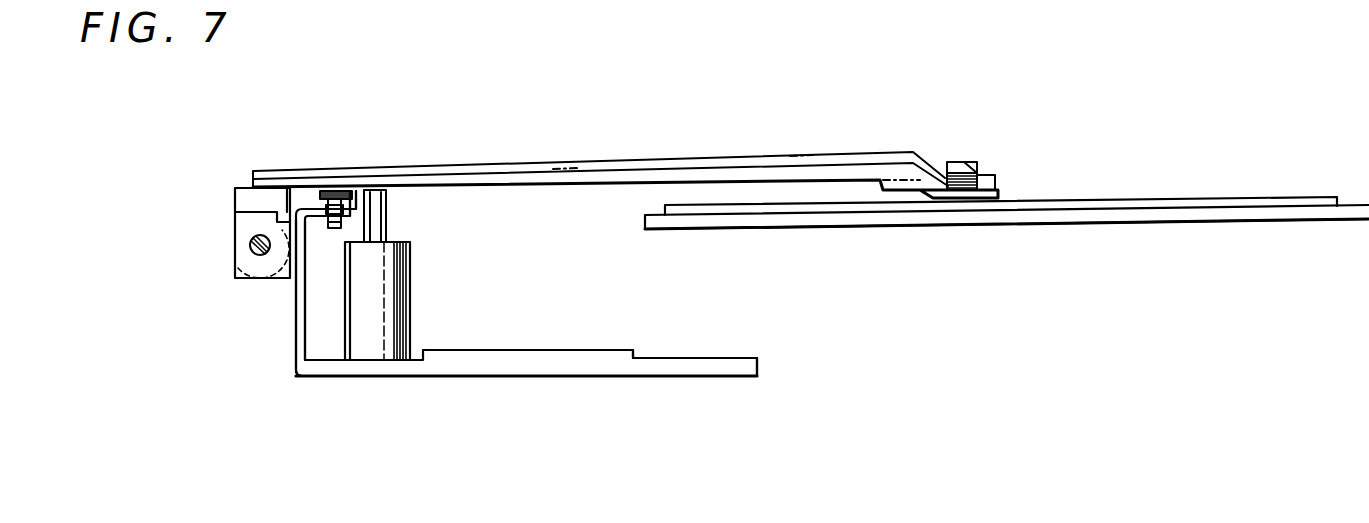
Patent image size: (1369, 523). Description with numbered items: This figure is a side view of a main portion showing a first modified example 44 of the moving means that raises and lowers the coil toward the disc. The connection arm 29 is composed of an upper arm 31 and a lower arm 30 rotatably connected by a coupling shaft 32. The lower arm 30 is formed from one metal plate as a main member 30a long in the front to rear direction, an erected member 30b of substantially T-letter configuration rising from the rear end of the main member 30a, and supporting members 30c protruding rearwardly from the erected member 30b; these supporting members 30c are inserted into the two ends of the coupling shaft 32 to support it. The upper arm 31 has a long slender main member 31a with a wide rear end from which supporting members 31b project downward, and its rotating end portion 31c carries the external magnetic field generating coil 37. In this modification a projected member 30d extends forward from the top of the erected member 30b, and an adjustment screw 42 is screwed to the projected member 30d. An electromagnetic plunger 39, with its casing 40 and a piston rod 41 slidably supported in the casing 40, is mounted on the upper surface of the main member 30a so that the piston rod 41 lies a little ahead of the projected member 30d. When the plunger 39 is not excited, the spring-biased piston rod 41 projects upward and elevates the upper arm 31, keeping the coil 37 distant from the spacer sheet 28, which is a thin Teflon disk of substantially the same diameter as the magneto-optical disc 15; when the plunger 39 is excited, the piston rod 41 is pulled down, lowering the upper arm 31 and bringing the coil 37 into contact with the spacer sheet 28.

The magneto-optical disc 15 is at (1182, 221).
The spacer sheet 28 is at (1192, 197).
The connection arm 29 is at (132, 265).
The lower arm 30 is at (295, 330).
The main member 30a is at (597, 367).
The erected member 30b is at (298, 351).
The supporting member 30c is at (282, 278).
The projected member 30d is at (359, 190).
The upper arm 31 is at (612, 162).
The main member 31a is at (475, 175).
The supporting member 31b is at (246, 190).
The rotating end portion 31c is at (1013, 152).
The coupling shaft 32 is at (233, 247).
The external magnetic field generating coil 37 is at (951, 160).
The electromagnetic plunger 39 is at (411, 263).
The casing 40 is at (411, 318).
The piston rod 41 is at (407, 165).
The adjustment screw 42 is at (323, 188).
The first modified example 44 is at (478, 227).